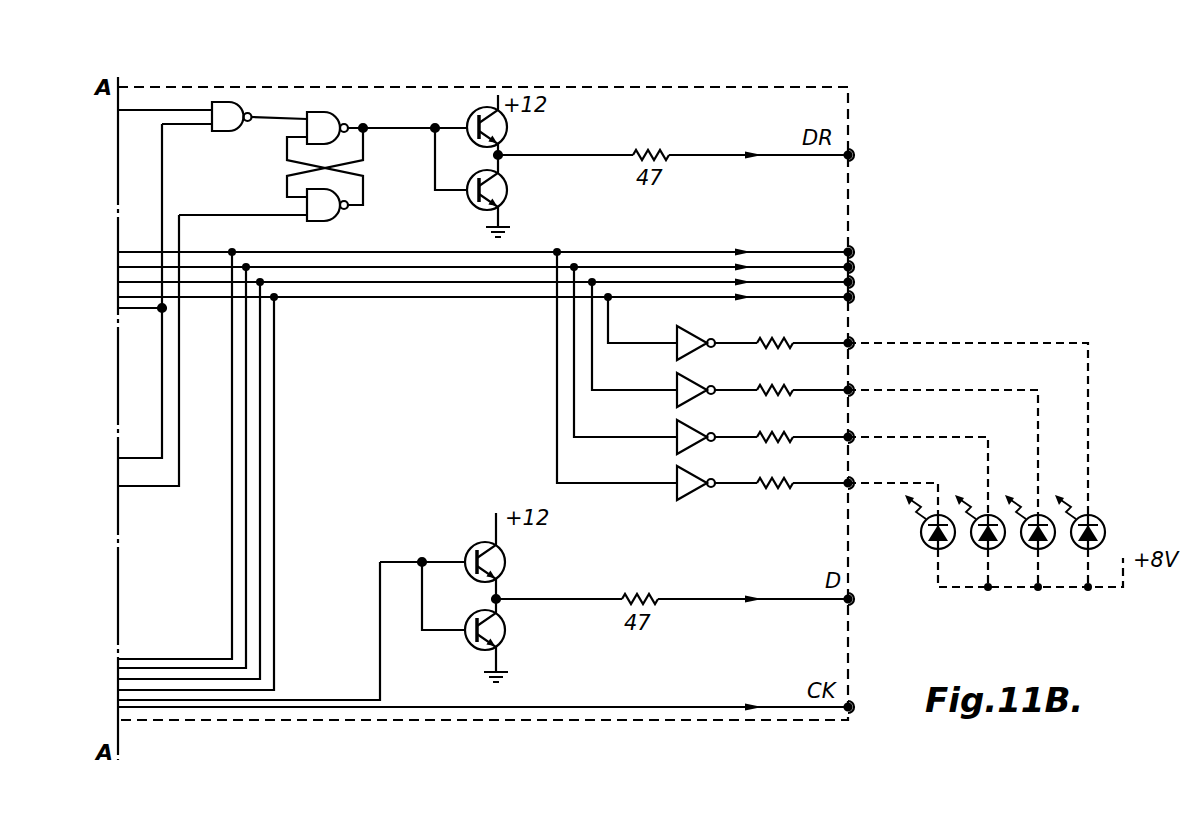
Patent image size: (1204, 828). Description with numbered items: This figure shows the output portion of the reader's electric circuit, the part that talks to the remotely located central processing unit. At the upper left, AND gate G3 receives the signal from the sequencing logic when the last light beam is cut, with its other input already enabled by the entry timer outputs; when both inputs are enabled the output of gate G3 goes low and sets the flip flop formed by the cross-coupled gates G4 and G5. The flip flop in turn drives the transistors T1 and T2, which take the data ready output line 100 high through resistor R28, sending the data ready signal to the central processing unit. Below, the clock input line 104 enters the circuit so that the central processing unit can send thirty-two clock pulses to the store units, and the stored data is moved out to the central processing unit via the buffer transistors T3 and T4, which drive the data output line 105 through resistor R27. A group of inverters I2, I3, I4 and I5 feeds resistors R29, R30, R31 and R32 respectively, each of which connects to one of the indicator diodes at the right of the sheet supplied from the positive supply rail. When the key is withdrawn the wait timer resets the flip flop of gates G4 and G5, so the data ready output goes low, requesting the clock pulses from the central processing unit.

The AND gate G3 is at (227, 131).
The gate forming flip flop G4 is at (334, 117).
The gate forming flip flop G5 is at (330, 216).
The transistor T1 is at (501, 125).
The transistor T2 is at (501, 191).
The buffer transistor T3 is at (501, 556).
The buffer transistor T4 is at (501, 635).
The resistor 47 ohm R27 is at (643, 586).
The resistor 47 ohm R28 is at (648, 140).
The resistor R29 is at (771, 333).
The resistor R30 is at (771, 378).
The resistor R31 is at (771, 425).
The resistor R32 is at (771, 471).
The inverter I2 is at (684, 333).
The inverter I3 is at (690, 383).
The inverter I4 is at (690, 430).
The inverter I5 is at (690, 476).
The output line 100 is at (770, 155).
The input line 104 is at (788, 706).
The output line 105 is at (787, 599).